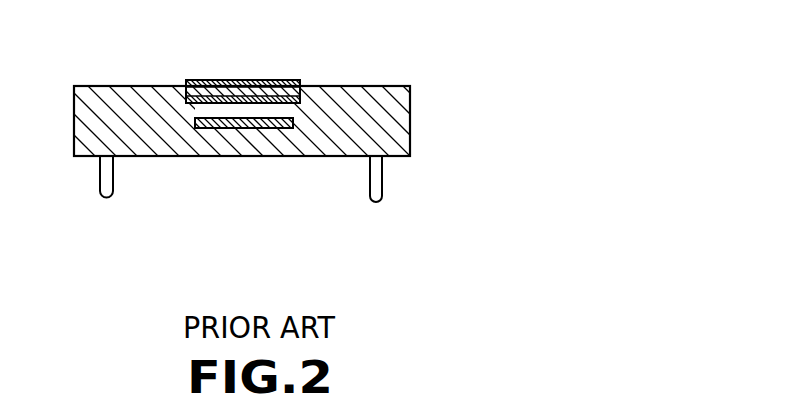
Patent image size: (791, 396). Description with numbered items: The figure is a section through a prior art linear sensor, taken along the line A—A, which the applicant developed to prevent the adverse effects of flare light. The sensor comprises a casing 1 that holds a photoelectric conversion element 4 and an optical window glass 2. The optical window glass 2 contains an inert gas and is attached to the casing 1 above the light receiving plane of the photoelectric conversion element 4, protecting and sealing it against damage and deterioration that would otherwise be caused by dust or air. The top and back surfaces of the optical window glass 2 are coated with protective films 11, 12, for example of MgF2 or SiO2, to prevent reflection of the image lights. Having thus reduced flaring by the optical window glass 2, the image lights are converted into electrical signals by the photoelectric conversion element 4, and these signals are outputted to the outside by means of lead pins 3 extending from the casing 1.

The casing 1 is at (376, 86).
The optical window glass 2 is at (245, 95).
The lead pins 3 is at (100, 190).
The photoelectric conversion element 4 is at (305, 161).
The protective film 11 is at (283, 82).
The protective film 12 is at (216, 103).